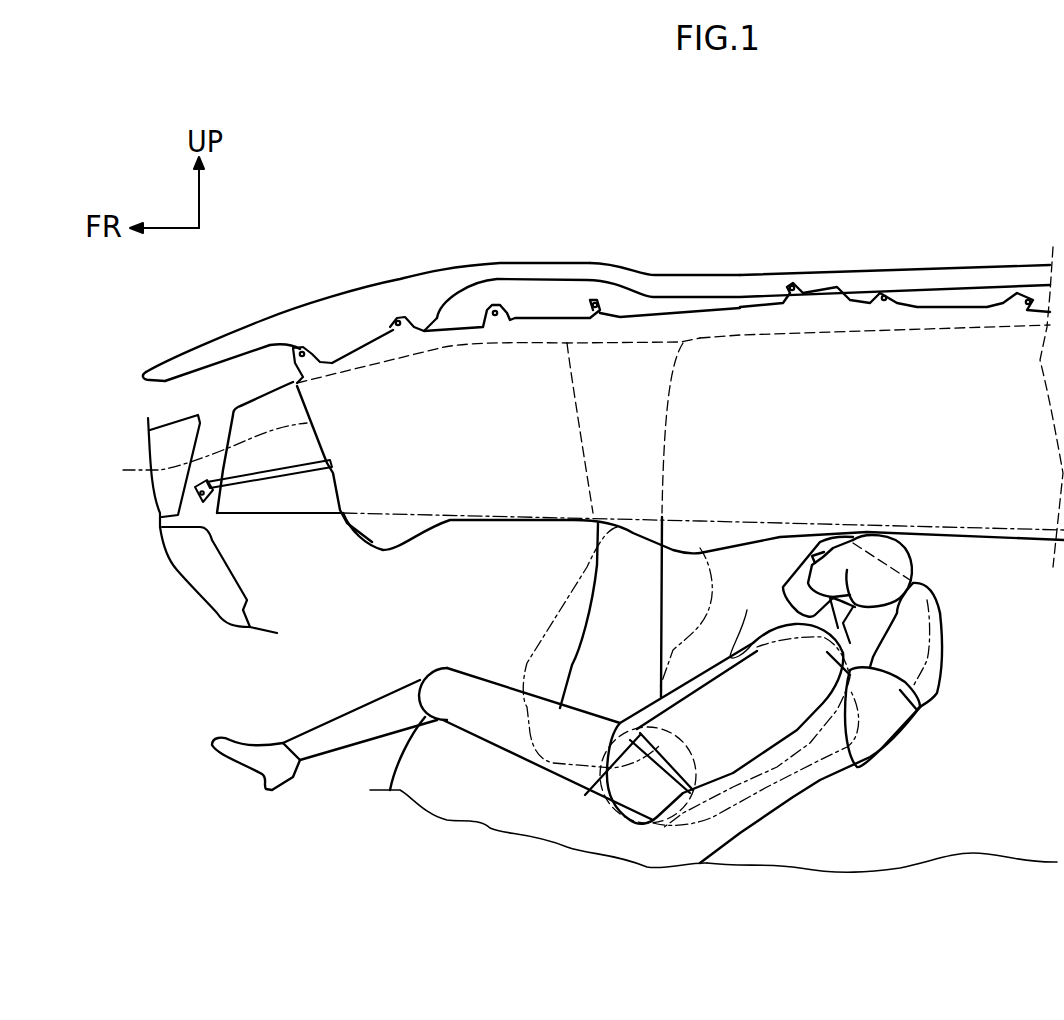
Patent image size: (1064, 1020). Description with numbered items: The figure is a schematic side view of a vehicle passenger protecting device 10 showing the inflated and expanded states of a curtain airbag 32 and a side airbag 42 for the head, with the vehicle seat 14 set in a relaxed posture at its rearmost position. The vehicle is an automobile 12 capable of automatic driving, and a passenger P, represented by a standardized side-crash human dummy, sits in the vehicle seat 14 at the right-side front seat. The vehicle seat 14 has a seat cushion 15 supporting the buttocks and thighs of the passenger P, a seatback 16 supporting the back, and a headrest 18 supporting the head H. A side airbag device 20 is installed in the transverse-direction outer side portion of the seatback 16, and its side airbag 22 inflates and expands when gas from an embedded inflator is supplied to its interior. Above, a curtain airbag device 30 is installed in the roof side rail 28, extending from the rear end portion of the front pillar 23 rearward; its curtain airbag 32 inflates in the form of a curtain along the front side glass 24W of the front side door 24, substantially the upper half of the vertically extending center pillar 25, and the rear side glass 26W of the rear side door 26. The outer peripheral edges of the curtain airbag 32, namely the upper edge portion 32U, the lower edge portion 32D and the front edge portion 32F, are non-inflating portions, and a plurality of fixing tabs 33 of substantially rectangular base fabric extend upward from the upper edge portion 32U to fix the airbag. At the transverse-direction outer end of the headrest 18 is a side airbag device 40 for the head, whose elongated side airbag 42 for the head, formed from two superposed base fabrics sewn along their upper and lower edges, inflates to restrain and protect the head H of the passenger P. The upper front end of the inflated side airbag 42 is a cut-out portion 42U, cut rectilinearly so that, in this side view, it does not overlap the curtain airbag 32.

The vehicle passenger protecting device 10 is at (948, 700).
The automobile 12 is at (883, 262).
The vehicle seat 14 is at (946, 612).
The seat cushion 15 is at (513, 810).
The seatback 16 is at (820, 783).
The headrest 18 is at (940, 667).
The side airbag device 20 is at (725, 810).
The side airbag 22 is at (543, 663).
The front pillar 23 is at (160, 367).
The front side door 24 is at (260, 568).
The front side glass 24W is at (267, 410).
The center pillar 25 is at (597, 577).
The rear side door 26 is at (938, 827).
The rear side glass 26W is at (958, 353).
The roof side rail 28 is at (653, 273).
The curtain airbag device 30 is at (543, 313).
The curtain airbag 32 is at (467, 373).
The upper edge portion 32U is at (742, 297).
The lower edge portion 32D is at (453, 520).
The front edge portion 32F is at (203, 462).
The fixing tab 33 is at (397, 317).
The side airbag device for the head 40 is at (921, 583).
The side airbag for the head 42 is at (795, 560).
The cut-out portion 42U is at (833, 553).
The head H is at (873, 540).
The passenger P is at (828, 712).